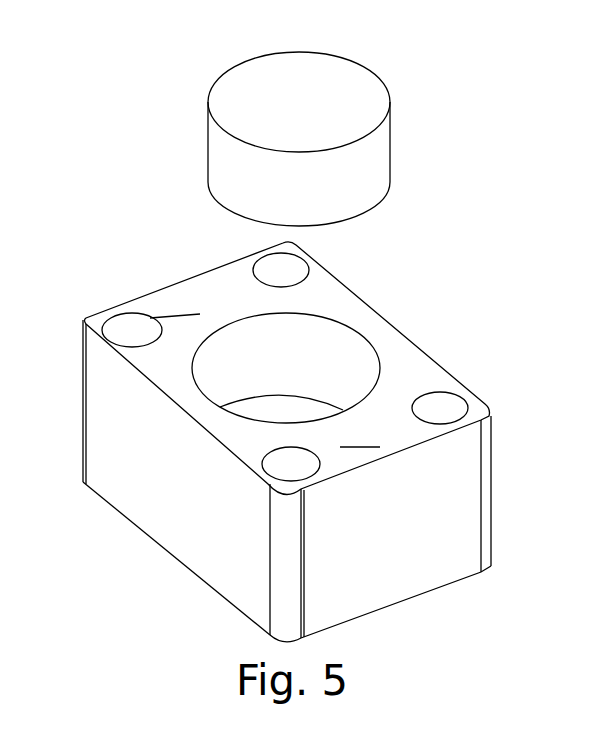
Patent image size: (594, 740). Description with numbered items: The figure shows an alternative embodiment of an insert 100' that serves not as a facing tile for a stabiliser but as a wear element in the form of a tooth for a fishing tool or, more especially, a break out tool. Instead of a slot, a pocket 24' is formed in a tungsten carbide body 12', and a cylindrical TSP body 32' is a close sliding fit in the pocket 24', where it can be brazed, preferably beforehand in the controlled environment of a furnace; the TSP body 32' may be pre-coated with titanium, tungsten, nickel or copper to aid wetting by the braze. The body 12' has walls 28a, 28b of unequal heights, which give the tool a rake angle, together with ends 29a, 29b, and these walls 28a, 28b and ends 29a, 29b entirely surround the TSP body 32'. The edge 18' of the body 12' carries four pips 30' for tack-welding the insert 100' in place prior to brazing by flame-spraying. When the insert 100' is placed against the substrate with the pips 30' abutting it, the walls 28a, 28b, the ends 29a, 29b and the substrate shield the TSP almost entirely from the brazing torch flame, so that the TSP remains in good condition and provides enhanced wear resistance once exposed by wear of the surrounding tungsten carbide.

The insert 100' is at (328, 343).
The cylindrical TSP body 32' is at (339, 135).
The tungsten carbide body 12' is at (328, 407).
The edge 18' is at (290, 368).
The wall 28a is at (198, 547).
The wall 28b is at (492, 478).
The pocket 24' is at (306, 334).
The pips 30' is at (273, 327).
The end 29a is at (203, 312).
The end 29b is at (362, 448).